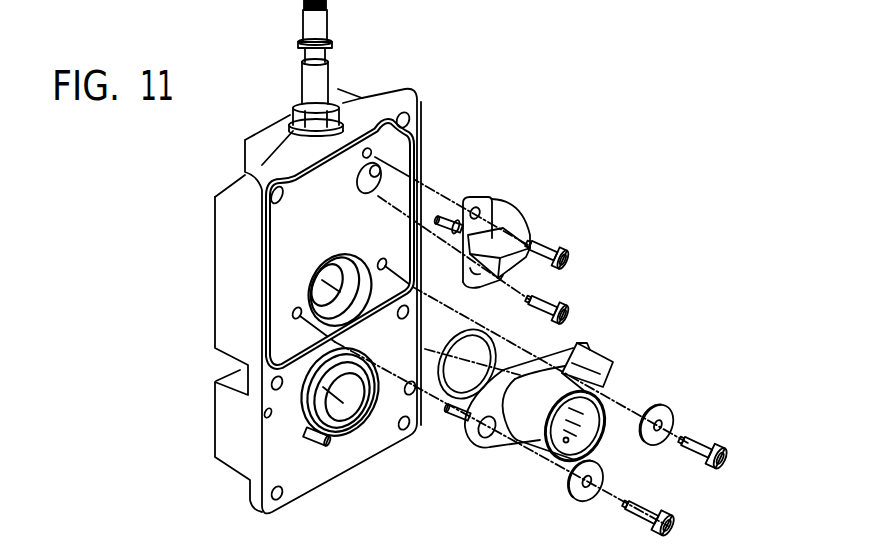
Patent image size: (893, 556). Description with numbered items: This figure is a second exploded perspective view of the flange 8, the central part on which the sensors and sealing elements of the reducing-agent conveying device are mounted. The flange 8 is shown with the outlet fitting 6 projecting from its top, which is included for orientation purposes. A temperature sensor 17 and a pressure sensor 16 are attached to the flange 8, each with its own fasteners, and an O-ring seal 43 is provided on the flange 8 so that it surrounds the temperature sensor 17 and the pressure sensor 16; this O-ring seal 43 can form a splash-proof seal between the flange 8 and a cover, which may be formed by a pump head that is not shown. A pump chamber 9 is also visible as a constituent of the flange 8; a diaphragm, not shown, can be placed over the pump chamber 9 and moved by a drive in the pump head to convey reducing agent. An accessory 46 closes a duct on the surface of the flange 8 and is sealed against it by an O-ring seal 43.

The outlet fitting 6 is at (322, 18).
The accessory 46 is at (477, 65).
The flange 8 is at (415, 101).
The temperature sensor 17 is at (533, 212).
The pressure sensor 16 is at (615, 345).
The O-ring seal 43 is at (260, 267).
The pump chamber 9 is at (357, 405).